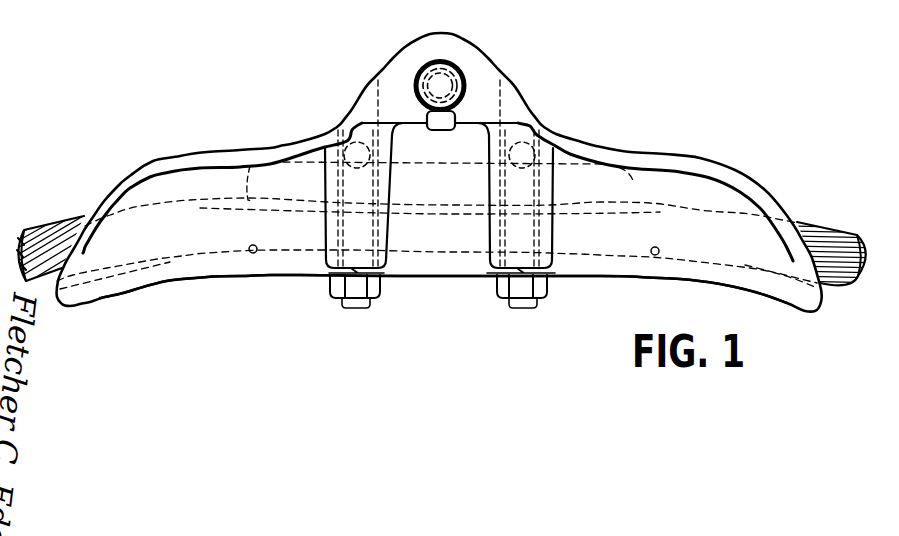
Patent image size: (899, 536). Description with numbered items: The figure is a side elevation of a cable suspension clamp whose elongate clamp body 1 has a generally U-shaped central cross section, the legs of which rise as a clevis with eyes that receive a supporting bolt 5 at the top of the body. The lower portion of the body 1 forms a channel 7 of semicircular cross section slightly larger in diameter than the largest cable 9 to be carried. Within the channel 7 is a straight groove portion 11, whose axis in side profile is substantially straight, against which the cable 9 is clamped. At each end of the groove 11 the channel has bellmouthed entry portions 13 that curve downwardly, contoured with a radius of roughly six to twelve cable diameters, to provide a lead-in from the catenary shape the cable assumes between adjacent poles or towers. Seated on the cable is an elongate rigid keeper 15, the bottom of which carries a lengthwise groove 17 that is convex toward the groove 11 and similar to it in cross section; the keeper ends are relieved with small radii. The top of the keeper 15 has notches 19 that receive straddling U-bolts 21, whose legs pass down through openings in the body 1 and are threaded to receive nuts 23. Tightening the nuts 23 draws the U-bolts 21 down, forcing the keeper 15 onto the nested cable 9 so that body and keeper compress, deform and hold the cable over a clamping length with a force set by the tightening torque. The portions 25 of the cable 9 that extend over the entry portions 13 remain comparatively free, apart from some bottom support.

The clamp body 1 is at (645, 147).
The supporting bolt 5 is at (468, 70).
The channel 7 is at (254, 254).
The cable 9 is at (836, 227).
The straight groove portion 11 is at (447, 254).
The bellmouthed entry portions 13 is at (197, 279).
The keeper 15 is at (577, 160).
The keeper groove 17 is at (426, 182).
The notches 19 is at (481, 152).
The U-bolts 21 is at (348, 104).
The nuts 23 is at (330, 296).
The cable portions 25 is at (194, 200).